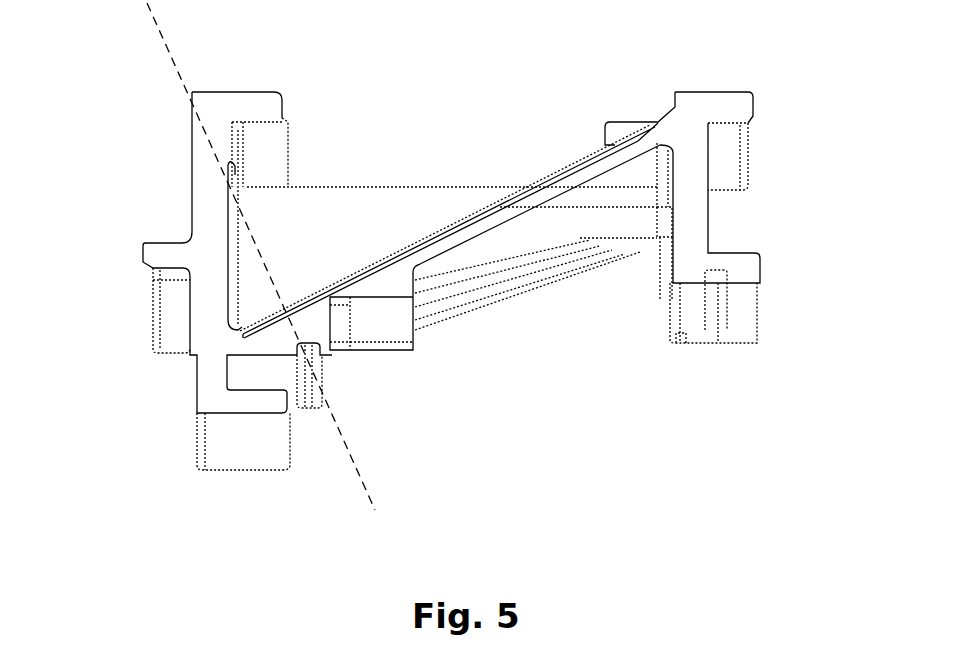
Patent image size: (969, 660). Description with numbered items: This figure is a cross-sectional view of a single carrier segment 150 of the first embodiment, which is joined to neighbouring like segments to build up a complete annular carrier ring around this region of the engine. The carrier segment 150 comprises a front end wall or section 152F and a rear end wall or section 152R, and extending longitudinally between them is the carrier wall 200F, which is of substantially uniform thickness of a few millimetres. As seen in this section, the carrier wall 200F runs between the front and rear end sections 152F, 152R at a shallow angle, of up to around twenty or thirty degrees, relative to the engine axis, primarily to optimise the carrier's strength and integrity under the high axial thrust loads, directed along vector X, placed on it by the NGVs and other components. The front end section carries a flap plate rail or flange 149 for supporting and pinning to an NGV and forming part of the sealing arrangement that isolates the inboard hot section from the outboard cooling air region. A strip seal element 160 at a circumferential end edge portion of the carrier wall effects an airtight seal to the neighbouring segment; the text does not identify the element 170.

The carrier segment 150 is at (440, 364).
The front end wall or section 152F is at (200, 147).
The rear end wall or section 152R is at (696, 226).
The flap plate rail or flange 149 is at (156, 258).
The carrier wall 200F is at (332, 197).
The support block 170 is at (533, 321).
The strip seal element 160 is at (525, 203).
The vector X is at (583, 160).